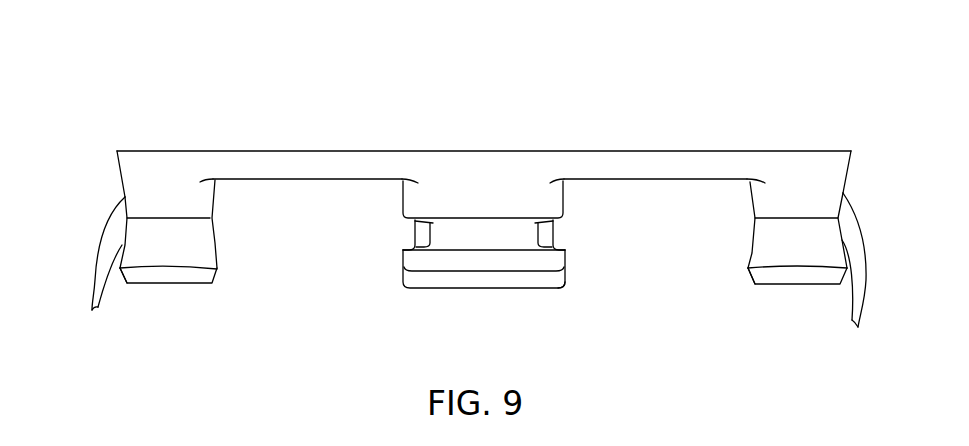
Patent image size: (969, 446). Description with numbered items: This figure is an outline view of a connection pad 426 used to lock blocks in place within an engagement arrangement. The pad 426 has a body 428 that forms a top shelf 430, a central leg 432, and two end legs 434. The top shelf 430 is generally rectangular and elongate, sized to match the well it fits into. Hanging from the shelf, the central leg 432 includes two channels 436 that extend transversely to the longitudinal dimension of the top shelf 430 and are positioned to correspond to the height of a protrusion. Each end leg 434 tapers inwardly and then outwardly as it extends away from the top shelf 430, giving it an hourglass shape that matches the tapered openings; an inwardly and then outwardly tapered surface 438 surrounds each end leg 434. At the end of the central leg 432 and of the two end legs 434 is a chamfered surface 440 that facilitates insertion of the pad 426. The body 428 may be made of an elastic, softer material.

The pad 426 is at (772, 140).
The body 428 is at (260, 168).
The top shelf 430 is at (687, 172).
The central leg 432 is at (480, 258).
The end legs 434 is at (167, 257).
The channels 436 is at (397, 240).
The tapered surface 438 is at (462, 269).
The chamfered surface 440 is at (115, 287).